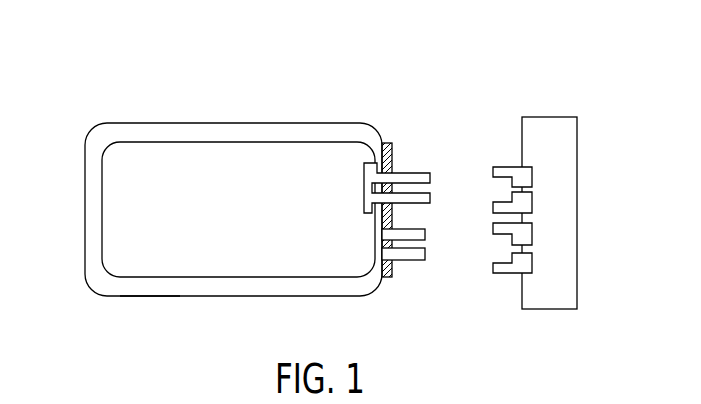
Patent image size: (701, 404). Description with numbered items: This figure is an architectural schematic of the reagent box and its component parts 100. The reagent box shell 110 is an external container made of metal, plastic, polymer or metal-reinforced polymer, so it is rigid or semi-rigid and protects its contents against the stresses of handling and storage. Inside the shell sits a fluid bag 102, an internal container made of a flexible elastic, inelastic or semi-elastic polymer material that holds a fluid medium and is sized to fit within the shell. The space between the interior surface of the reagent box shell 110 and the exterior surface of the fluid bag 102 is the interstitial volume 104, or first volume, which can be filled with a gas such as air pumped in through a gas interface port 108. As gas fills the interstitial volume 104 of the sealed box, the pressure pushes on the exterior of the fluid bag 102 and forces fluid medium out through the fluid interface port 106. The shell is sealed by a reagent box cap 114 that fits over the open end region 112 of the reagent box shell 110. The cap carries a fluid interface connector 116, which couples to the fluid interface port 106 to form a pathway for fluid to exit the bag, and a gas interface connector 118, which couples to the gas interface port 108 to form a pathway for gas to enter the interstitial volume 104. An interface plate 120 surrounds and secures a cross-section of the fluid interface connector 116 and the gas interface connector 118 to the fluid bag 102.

The reagent box and its component parts 100 is at (114, 72).
The fluid bag 102 is at (207, 277).
The interstitial volume 104 is at (248, 295).
The fluid interface port 106 is at (362, 189).
The gas interface port 108 is at (386, 244).
The reagent box shell 110 is at (150, 297).
The open end region 112 is at (377, 241).
The reagent box cap 114 is at (560, 117).
The fluid interface connector 116 is at (515, 166).
The gas interface connector 118 is at (512, 274).
The interface plate 120 is at (395, 167).